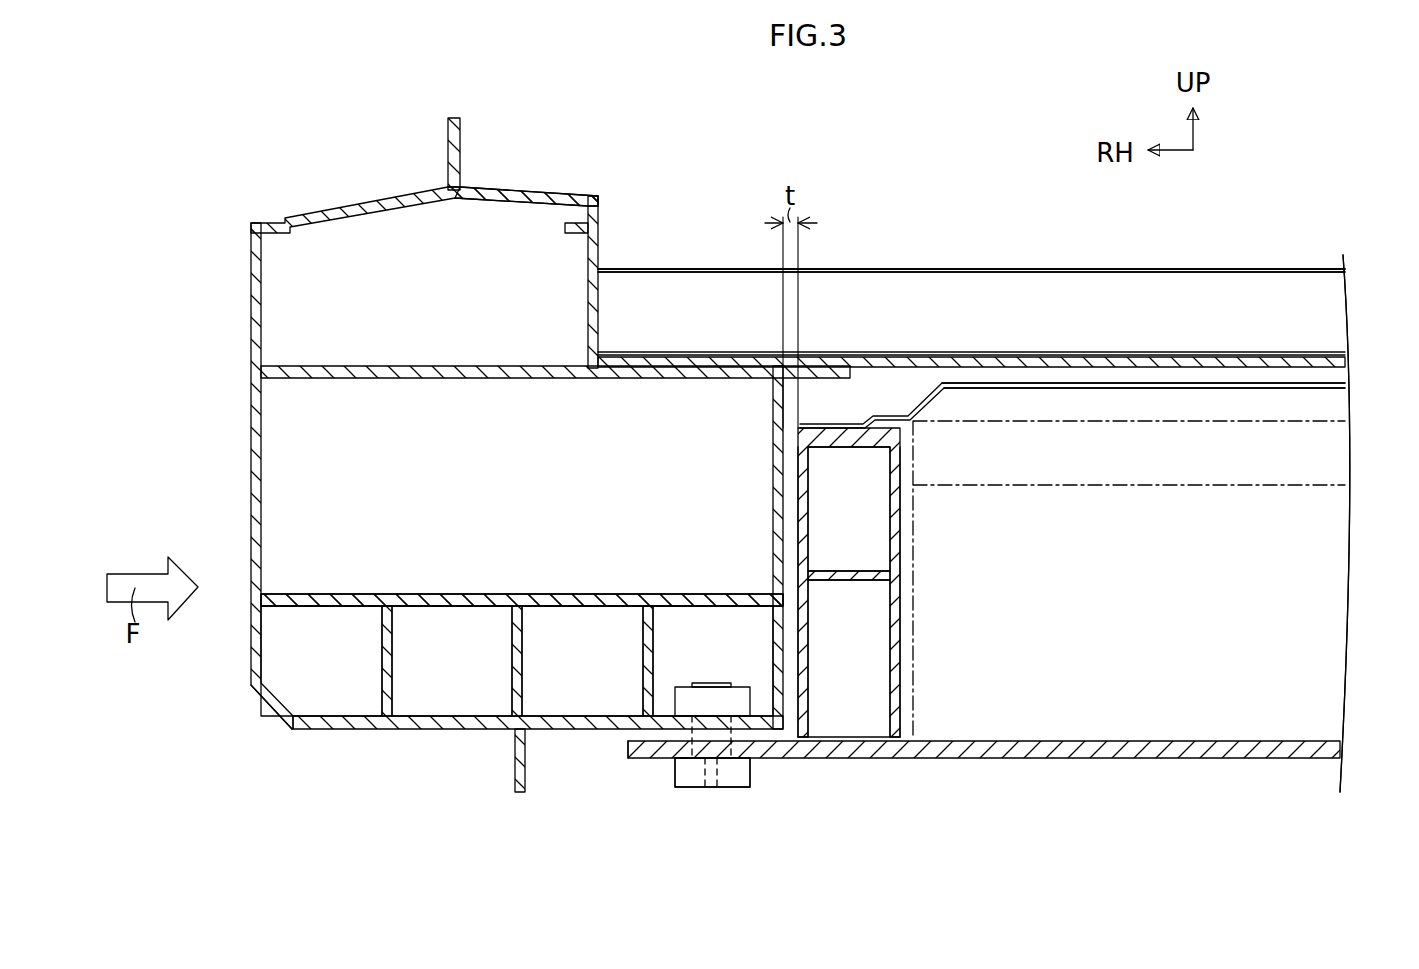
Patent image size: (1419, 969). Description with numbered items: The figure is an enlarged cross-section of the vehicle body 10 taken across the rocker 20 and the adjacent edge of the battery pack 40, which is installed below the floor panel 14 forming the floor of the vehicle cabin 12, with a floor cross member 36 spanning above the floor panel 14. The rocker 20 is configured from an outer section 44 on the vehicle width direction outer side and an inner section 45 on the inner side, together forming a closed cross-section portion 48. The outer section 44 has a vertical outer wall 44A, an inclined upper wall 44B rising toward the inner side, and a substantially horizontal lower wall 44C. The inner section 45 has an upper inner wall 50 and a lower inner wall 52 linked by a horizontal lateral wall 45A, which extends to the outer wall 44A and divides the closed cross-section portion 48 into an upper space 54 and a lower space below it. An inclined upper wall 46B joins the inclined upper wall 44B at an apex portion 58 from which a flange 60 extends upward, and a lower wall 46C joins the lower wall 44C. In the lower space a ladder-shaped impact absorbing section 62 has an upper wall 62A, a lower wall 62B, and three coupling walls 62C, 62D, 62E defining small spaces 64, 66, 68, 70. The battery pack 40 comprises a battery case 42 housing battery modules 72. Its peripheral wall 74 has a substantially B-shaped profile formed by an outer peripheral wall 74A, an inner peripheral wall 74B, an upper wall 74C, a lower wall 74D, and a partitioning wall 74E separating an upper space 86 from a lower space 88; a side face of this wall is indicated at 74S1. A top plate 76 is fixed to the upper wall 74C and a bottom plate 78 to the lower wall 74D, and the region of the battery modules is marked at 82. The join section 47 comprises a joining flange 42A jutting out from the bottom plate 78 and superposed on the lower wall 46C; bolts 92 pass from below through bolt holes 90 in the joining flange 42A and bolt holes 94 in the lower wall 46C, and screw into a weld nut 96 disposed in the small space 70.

The vehicle body 10 is at (840, 150).
The vehicle cabin 12 is at (953, 215).
The floor panel 14 is at (1000, 352).
The rocker 20 is at (262, 190).
The floor cross member 36 is at (1163, 268).
The battery pack 40 is at (1250, 780).
The battery case 42 is at (974, 788).
The joining flange 42A is at (640, 758).
The outer section 44 is at (224, 476).
The outer wall 44A is at (250, 500).
The inclined upper wall 44B is at (340, 215).
The lower wall 44C is at (332, 729).
The inner section 45 is at (600, 243).
The lateral wall 45A is at (680, 378).
The inclined upper wall 46B is at (545, 196).
The lower wall 46C is at (573, 729).
The join section 47 is at (747, 797).
The closed cross-section portion 48 is at (488, 593).
The upper inner wall 50 is at (598, 282).
The lower inner wall 52 is at (770, 428).
The upper space 54 is at (418, 365).
The apex portion 58 is at (462, 185).
The flange 60 is at (448, 128).
The impact absorbing section 62 is at (522, 659).
The upper wall 62A is at (415, 594).
The lower wall 62B is at (445, 729).
The coupling wall 62C is at (392, 686).
The coupling wall 62D is at (522, 686).
The coupling wall 62E is at (653, 660).
The small space 64 is at (325, 607).
The small space 66 is at (445, 607).
The small space 68 is at (572, 607).
The small space 70 is at (653, 622).
The battery module 72 is at (1330, 453).
The peripheral wall 74 is at (1071, 573).
The outer peripheral wall 74A is at (805, 482).
The inner peripheral wall 74B is at (897, 543).
The upper wall 74C is at (880, 420).
The lower wall 74D is at (875, 736).
The partitioning wall 74E is at (847, 578).
The bracket side surface 74S1 is at (827, 744).
The top plate 76 is at (1205, 383).
The bottom plate 78 is at (1062, 758).
The battery stack 82 is at (1322, 605).
The upper space 86 is at (890, 519).
The lower space 88 is at (890, 645).
The bolt hole 90 is at (705, 765).
The bolt 92 is at (735, 770).
The bolt hole 94 is at (717, 790).
The weld nut 96 is at (745, 687).